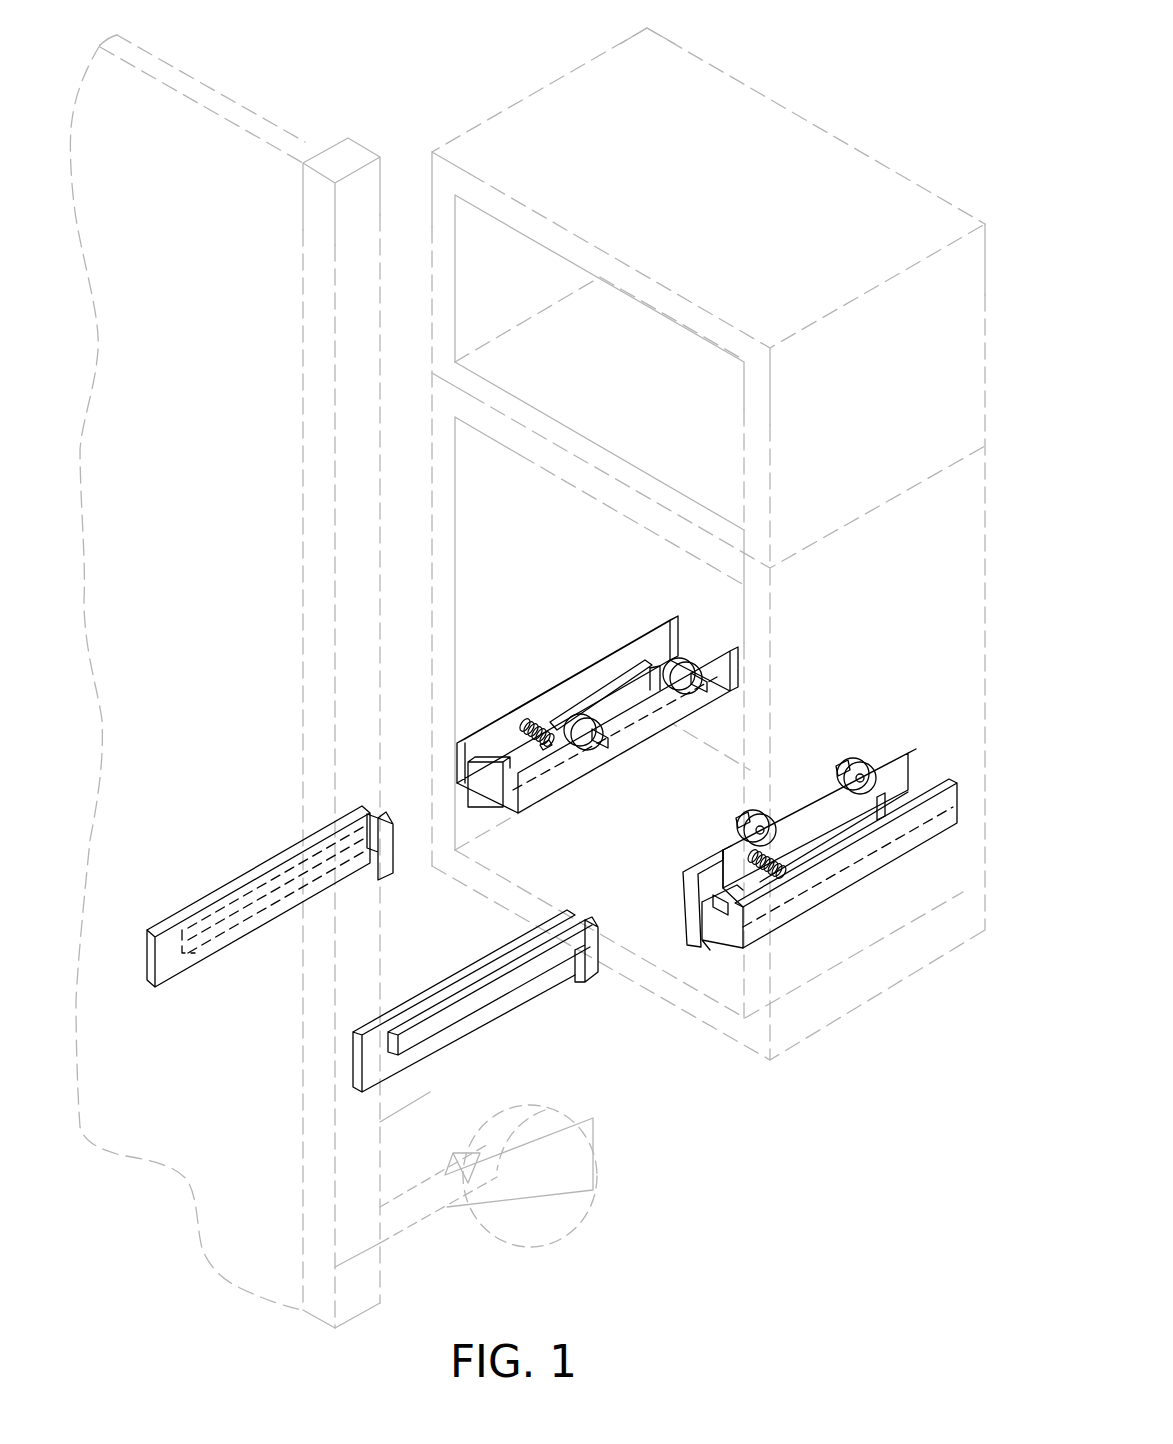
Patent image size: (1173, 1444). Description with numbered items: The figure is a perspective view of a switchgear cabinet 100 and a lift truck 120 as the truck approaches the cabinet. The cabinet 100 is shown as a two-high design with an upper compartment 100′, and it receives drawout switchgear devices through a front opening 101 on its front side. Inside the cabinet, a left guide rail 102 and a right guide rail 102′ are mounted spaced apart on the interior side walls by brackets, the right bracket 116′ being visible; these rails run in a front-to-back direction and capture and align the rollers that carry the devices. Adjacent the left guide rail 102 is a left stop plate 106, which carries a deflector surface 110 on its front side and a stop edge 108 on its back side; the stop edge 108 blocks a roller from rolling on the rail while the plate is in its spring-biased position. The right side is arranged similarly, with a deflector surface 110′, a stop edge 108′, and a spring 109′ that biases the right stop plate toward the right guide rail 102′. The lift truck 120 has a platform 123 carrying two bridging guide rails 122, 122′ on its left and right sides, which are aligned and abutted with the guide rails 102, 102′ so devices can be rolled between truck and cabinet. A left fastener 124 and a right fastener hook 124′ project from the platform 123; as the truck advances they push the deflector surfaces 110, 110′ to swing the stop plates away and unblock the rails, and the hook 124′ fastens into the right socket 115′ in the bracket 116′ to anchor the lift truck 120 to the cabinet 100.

The switchgear cabinet 100 is at (789, 1055).
The upper compartment 100′ is at (885, 152).
The front opening 101 is at (698, 966).
The left guide rail 102 is at (662, 675).
The right guide rail 102′ is at (900, 757).
The left stop plate 106 is at (486, 746).
The stop edge 108 is at (543, 744).
The stop edge 108′ is at (728, 852).
The spring 109′ is at (783, 857).
The deflector surface 110 is at (478, 786).
The deflector surface 110′ is at (690, 908).
The right socket 115′ is at (727, 907).
The right bracket 116′ is at (830, 888).
The lift truck 120 is at (615, 1192).
The bridging guide rail 122 is at (212, 892).
The bridging guide rail 122′ is at (435, 1095).
The platform 123 is at (402, 1097).
The left fastener 124 is at (383, 876).
The right fastener hook 124′ is at (592, 972).